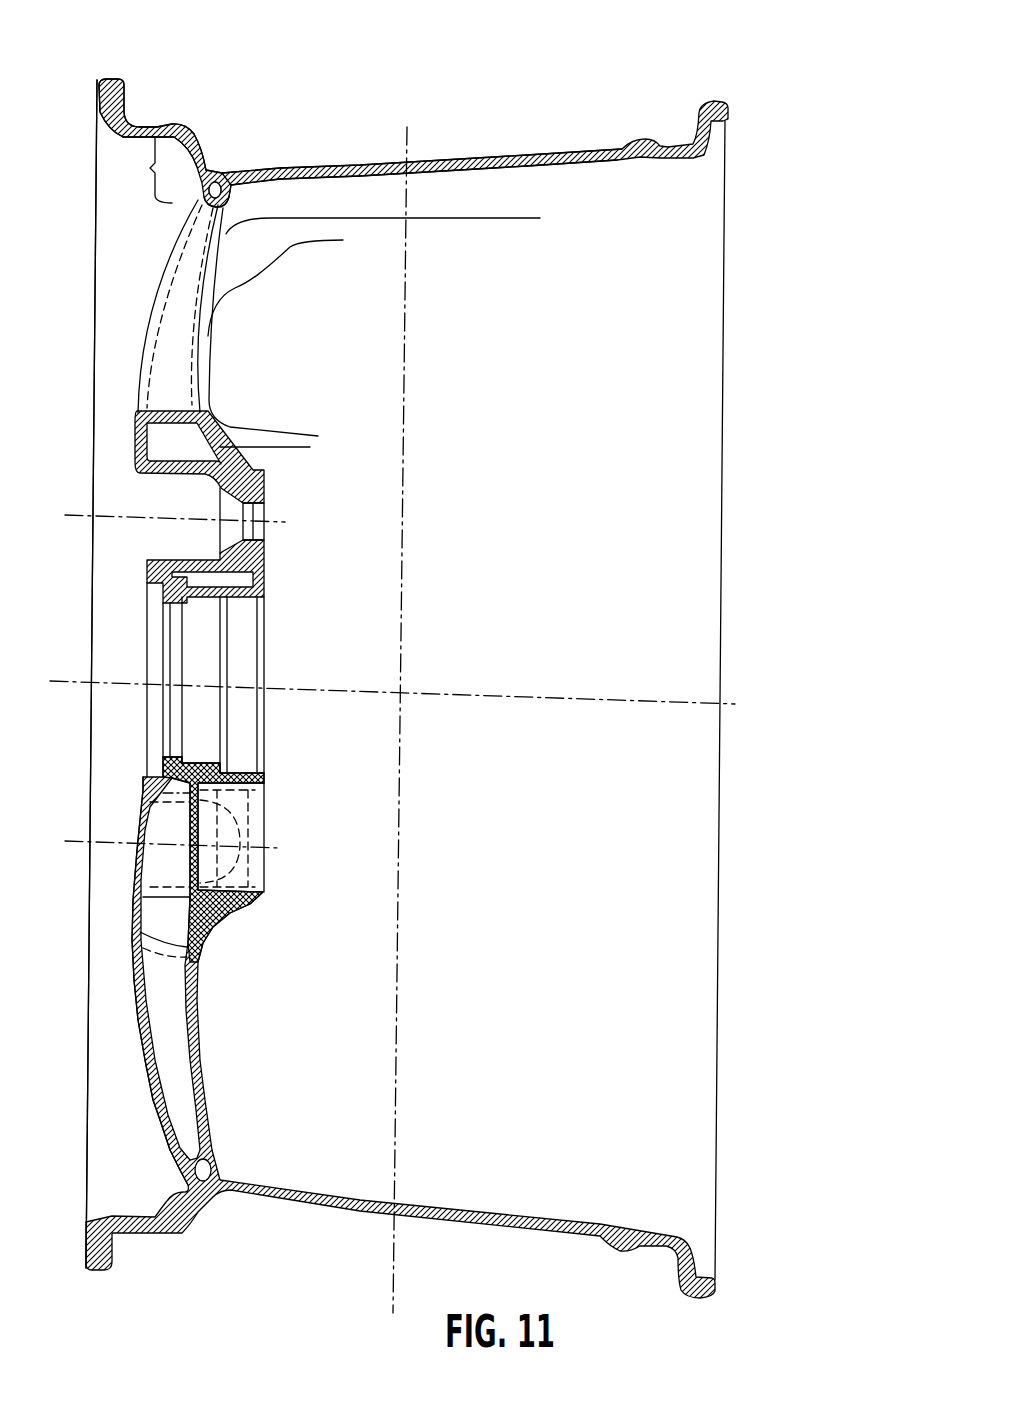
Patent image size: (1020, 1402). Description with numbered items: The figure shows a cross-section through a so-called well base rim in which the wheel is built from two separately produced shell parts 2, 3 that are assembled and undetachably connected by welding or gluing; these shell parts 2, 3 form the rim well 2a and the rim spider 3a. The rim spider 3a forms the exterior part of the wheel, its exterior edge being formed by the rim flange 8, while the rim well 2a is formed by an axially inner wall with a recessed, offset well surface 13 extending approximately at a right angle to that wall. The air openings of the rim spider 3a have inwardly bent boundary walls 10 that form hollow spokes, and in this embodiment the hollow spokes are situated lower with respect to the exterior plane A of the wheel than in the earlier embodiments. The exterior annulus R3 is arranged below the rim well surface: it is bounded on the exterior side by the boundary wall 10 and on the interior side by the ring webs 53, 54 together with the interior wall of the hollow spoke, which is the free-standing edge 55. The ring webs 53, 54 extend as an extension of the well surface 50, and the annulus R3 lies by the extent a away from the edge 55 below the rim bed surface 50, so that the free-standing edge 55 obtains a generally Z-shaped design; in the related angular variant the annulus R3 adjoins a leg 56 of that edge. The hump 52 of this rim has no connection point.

The shell part 2 is at (556, 128).
The rim well 2a is at (297, 170).
The shell part 3 is at (113, 948).
The rim spider 3a is at (150, 1038).
The rim flange 8 is at (113, 84).
The boundary wall 10 is at (190, 206).
The well surface 13 is at (455, 150).
The well surface 50 is at (360, 158).
The hump 52 is at (190, 123).
The ring web 53 is at (215, 173).
The ring web 54 is at (223, 175).
The free-standing edge 55 is at (159, 96).
The leg 56 is at (238, 194).
The exterior plane A is at (85, 344).
The extent a is at (149, 170).
The exterior annulus R3 is at (225, 204).